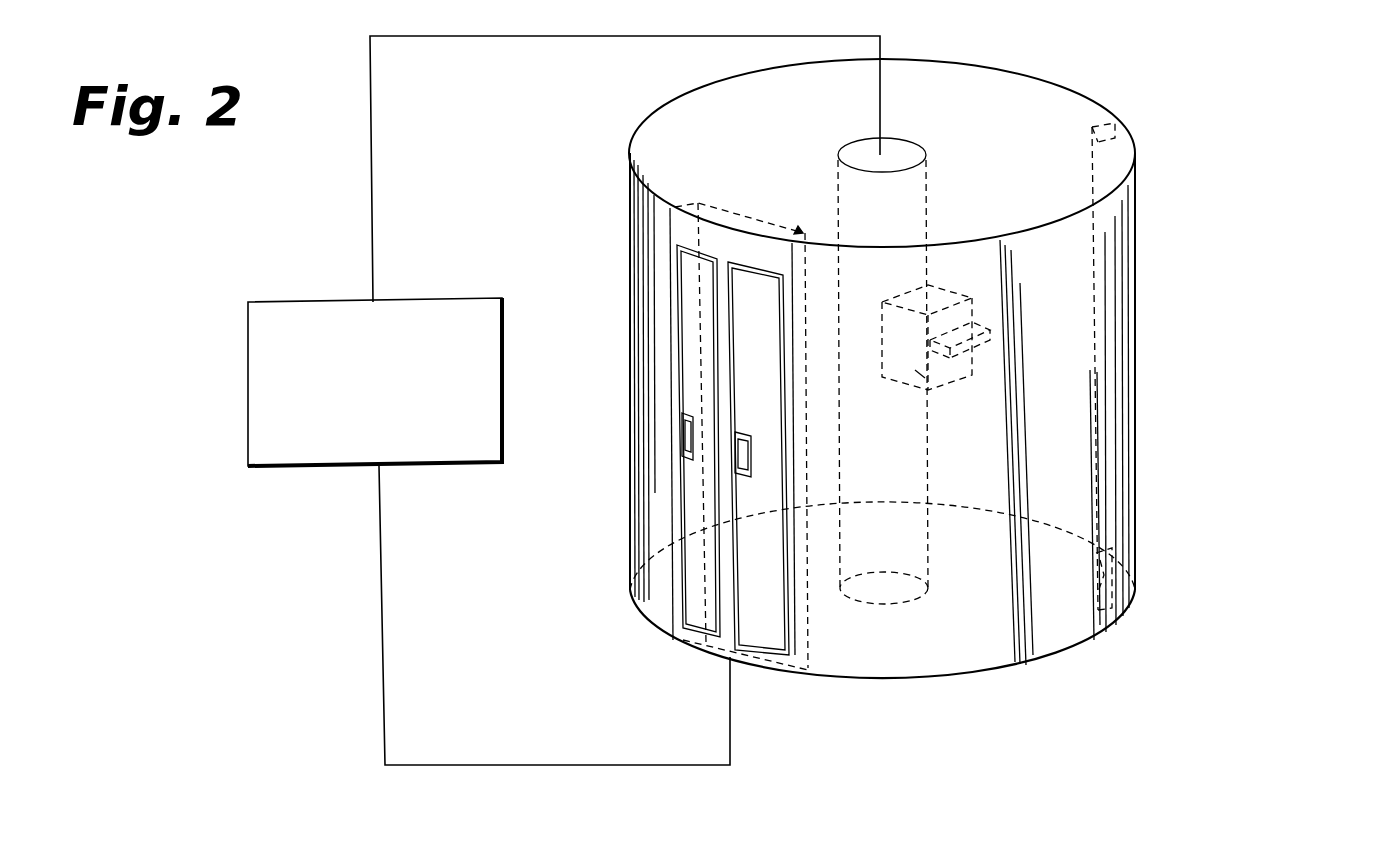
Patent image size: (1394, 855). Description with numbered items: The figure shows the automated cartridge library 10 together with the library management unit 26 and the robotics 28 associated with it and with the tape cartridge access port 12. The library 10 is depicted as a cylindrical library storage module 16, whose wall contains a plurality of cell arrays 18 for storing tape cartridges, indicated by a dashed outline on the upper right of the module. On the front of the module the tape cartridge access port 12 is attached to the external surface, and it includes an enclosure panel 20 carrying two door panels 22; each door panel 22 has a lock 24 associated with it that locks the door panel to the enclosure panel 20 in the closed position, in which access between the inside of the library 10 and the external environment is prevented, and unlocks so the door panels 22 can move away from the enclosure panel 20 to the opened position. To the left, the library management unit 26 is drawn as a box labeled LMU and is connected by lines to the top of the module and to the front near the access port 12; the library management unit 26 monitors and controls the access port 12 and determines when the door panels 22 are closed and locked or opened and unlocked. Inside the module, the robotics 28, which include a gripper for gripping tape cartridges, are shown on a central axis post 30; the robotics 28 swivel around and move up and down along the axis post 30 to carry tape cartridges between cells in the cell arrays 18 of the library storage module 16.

The automated cartridge library 10 is at (1296, 73).
The tape cartridge access port 12 is at (764, 664).
The library storage module 16 is at (1041, 80).
The cell arrays 18 is at (1133, 130).
The enclosure panel 20 is at (787, 670).
The door panels 22 is at (738, 339).
The lock 24 is at (737, 461).
The library management unit 26 is at (318, 466).
The robotics 28 is at (950, 393).
The axis post 30 is at (932, 474).